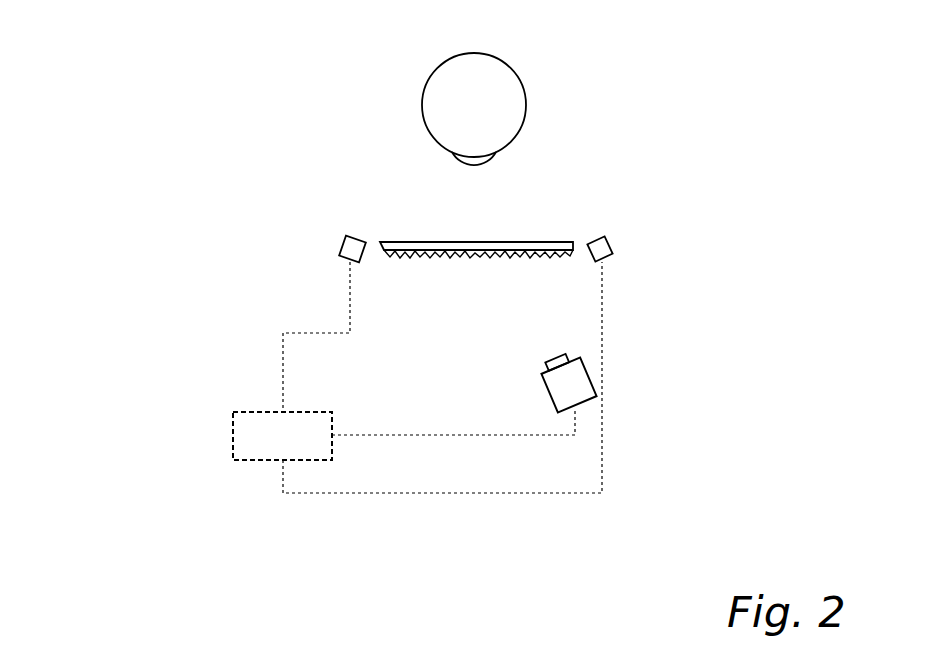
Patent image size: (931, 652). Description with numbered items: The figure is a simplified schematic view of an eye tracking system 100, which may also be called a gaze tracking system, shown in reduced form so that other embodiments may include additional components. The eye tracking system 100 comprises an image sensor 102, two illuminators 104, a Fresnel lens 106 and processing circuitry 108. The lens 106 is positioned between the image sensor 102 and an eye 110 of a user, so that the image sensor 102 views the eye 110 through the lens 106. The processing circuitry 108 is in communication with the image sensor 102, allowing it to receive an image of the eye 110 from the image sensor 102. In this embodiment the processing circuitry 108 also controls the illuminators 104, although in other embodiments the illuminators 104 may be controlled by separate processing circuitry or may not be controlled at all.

The eye tracking system 100 is at (141, 170).
The image sensor 102 is at (590, 373).
The illuminators 104 is at (342, 247).
The Fresnel lens 106 is at (527, 243).
The processing circuitry 108 is at (248, 460).
The eye 110 is at (525, 92).